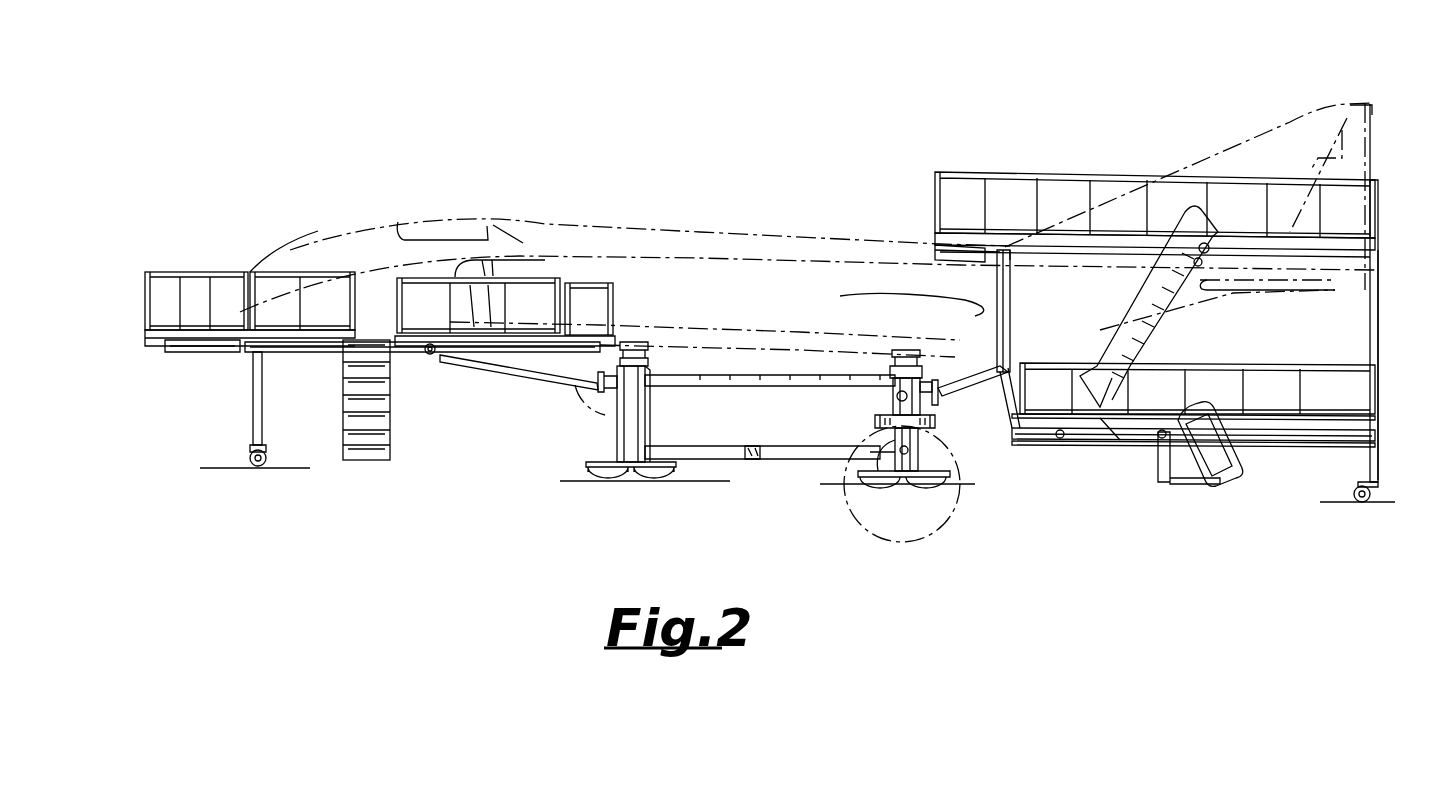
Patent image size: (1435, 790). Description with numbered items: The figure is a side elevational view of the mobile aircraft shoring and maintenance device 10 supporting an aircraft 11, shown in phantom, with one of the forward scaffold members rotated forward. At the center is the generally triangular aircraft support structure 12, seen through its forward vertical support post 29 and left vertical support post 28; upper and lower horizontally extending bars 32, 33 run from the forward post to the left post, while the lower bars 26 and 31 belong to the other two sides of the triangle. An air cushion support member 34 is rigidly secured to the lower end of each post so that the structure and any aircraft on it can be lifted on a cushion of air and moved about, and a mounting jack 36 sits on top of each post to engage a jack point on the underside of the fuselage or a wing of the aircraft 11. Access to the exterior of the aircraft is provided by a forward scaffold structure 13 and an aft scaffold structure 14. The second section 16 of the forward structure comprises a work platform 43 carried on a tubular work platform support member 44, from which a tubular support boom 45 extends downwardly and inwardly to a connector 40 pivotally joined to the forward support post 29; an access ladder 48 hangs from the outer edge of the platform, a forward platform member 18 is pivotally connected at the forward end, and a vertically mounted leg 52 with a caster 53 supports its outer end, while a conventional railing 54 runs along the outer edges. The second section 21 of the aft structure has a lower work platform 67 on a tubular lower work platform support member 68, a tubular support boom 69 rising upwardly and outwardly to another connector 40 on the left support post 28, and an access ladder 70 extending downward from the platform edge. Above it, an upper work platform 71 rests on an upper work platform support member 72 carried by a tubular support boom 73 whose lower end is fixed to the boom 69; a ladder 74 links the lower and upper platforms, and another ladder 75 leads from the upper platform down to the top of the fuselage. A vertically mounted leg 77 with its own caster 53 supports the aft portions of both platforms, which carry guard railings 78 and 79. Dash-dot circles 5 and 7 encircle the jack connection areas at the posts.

The rear jack assembly 5 is at (938, 532).
The front jack coupling detail 7 is at (585, 395).
The mobile aircraft shoring and maintenance device 10 is at (957, 168).
The aircraft 11 is at (1373, 98).
The aircraft support structure 12 is at (617, 430).
The forward scaffold structure 13 is at (183, 266).
The aft scaffold structure 14 is at (1385, 200).
The second section 16 is at (333, 340).
The forward platform member 18 is at (153, 340).
The second section 21 is at (1103, 442).
The lower horizontally extending bar 26 is at (936, 440).
The left vertical support post 28 is at (890, 398).
The forward vertical support post 29 is at (618, 440).
The lower horizontally extending bar 31 is at (754, 447).
The upper horizontally extending bar 32 is at (700, 388).
The lower horizontally extending bar 33 is at (803, 462).
The air cushion support member 34 is at (642, 480).
The mounting jack 36 is at (636, 342).
The connector 40 is at (604, 390).
The work platform 43 is at (250, 330).
The tubular work platform support member 44 is at (410, 352).
The tubular support boom 45 is at (525, 372).
The access ladder 48 is at (392, 446).
The vertically mounted leg 52 is at (252, 402).
The caster 53 is at (262, 464).
The railing 54 is at (410, 274).
The lower work platform 67 is at (1285, 418).
The tubular lower work platform support member 68 is at (1270, 444).
The tubular support boom 69 is at (1000, 432).
The access ladder 70 is at (1197, 460).
The upper work platform 71 is at (1037, 240).
The upper work platform support member 72 is at (1098, 257).
The tubular support boom 73 is at (1013, 312).
The ladder 74 is at (1157, 332).
The ladder 75 is at (945, 252).
The vertically mounted leg 77 is at (1380, 320).
The guard railing 78 is at (1268, 366).
The guard railing 79 is at (1270, 180).